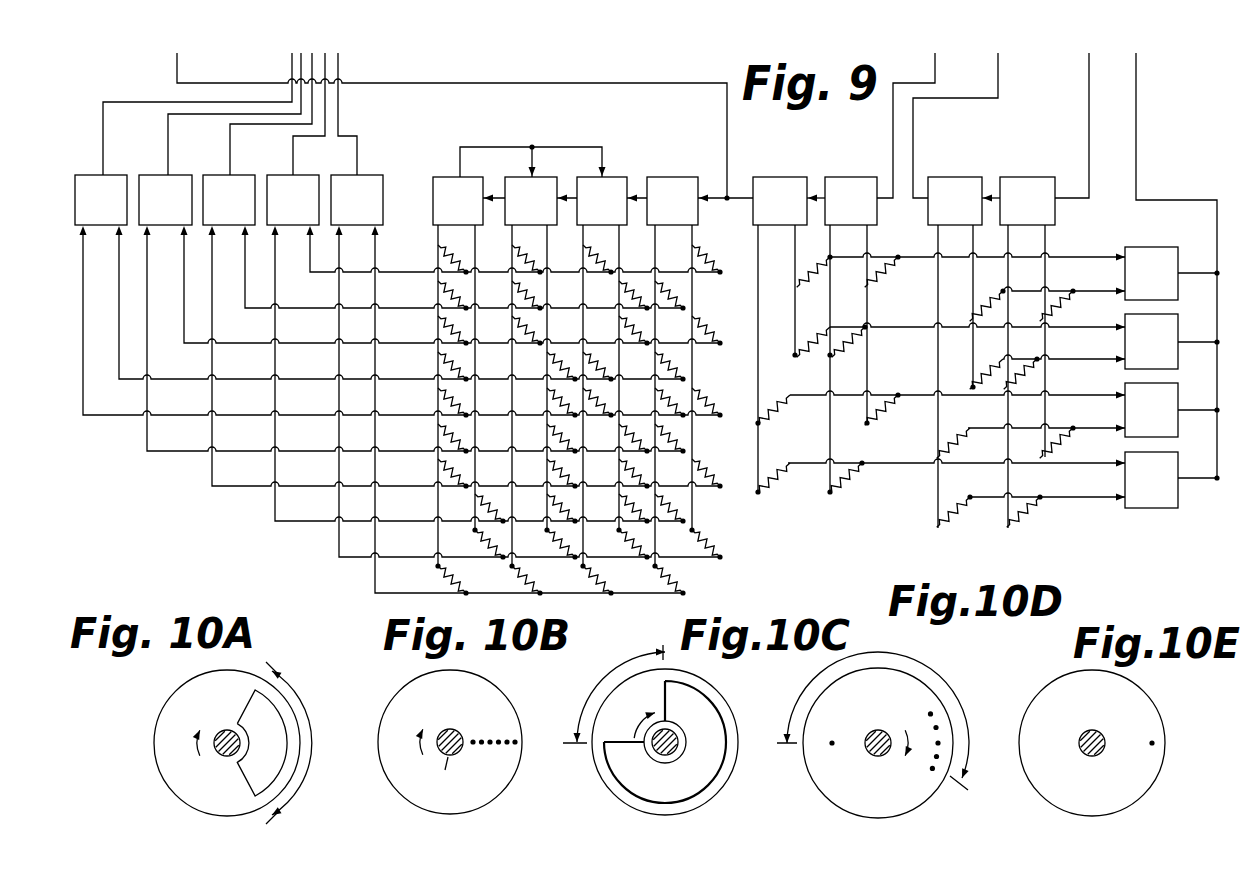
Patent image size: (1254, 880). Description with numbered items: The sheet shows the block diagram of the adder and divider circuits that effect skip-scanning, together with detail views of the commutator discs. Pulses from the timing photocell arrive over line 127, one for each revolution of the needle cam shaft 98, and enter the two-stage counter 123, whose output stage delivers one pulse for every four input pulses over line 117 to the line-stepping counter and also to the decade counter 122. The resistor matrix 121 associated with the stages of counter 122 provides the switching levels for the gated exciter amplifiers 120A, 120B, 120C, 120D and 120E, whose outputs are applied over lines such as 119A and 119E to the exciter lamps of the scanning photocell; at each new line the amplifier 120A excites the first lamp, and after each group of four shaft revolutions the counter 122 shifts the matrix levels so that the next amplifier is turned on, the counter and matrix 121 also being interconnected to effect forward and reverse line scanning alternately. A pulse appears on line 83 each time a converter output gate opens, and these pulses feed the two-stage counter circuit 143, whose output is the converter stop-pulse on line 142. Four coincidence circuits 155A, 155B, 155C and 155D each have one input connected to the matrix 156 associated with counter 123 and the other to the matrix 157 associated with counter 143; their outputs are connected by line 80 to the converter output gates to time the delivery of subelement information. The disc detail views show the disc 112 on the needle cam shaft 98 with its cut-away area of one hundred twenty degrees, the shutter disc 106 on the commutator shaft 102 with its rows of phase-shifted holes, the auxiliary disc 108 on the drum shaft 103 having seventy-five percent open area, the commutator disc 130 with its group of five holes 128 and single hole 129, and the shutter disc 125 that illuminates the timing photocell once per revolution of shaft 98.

In FIG. 9, the line 80 is at (1136, 91).
In FIG. 9, the line 83 is at (1089, 138).
In FIG. 10A, the needle cam shaft 98 is at (222, 755).
In FIG. 10D, the needle cam shaft 98 is at (878, 757).
In FIG. 10E, the needle cam shaft 98 is at (1093, 728).
In FIG. 10B, the commutator shaft 102 is at (444, 761).
In FIG. 10C, the drum shaft 103 is at (663, 753).
In FIG. 10B, the shutter disc 106 is at (498, 687).
In FIG. 10C, the auxiliary disc 108 is at (715, 692).
In FIG. 10A, the disc 112 is at (155, 726).
In FIG. 9, the line 117 is at (177, 67).
In FIG. 9, the line 119A is at (153, 102).
In FIG. 9, the line 119E is at (340, 110).
In FIG. 9, the gated amplifier 120A is at (98, 176).
In FIG. 9, the gated amplifier 120B is at (157, 175).
In FIG. 9, the gated amplifier 120C is at (220, 175).
In FIG. 9, the gated amplifier 120D is at (283, 175).
In FIG. 9, the gated amplifier 120E is at (362, 175).
In FIG. 9, the matrix 121 is at (435, 599).
In FIG. 9, the decade counter 122 is at (447, 136).
In FIG. 9, the counter 123 is at (748, 172).
In FIG. 10E, the shutter disc 125 is at (1137, 803).
In FIG. 9, the line 127 is at (935, 66).
In FIG. 10D, the holes 128 is at (941, 743).
In FIG. 10D, the hole 129 is at (834, 740).
In FIG. 10D, the commutator disc 130 is at (825, 795).
In FIG. 9, the line 142 is at (998, 82).
In FIG. 9, the counter circuit 143 is at (925, 172).
In FIG. 9, the coincidence circuit 155A is at (1140, 247).
In FIG. 9, the coincidence circuit 155B is at (1125, 343).
In FIG. 9, the coincidence circuit 155C is at (1125, 410).
In FIG. 9, the coincidence circuit 155D is at (1125, 478).
In FIG. 9, the matrix 156 is at (878, 499).
In FIG. 9, the matrix 157 is at (915, 531).